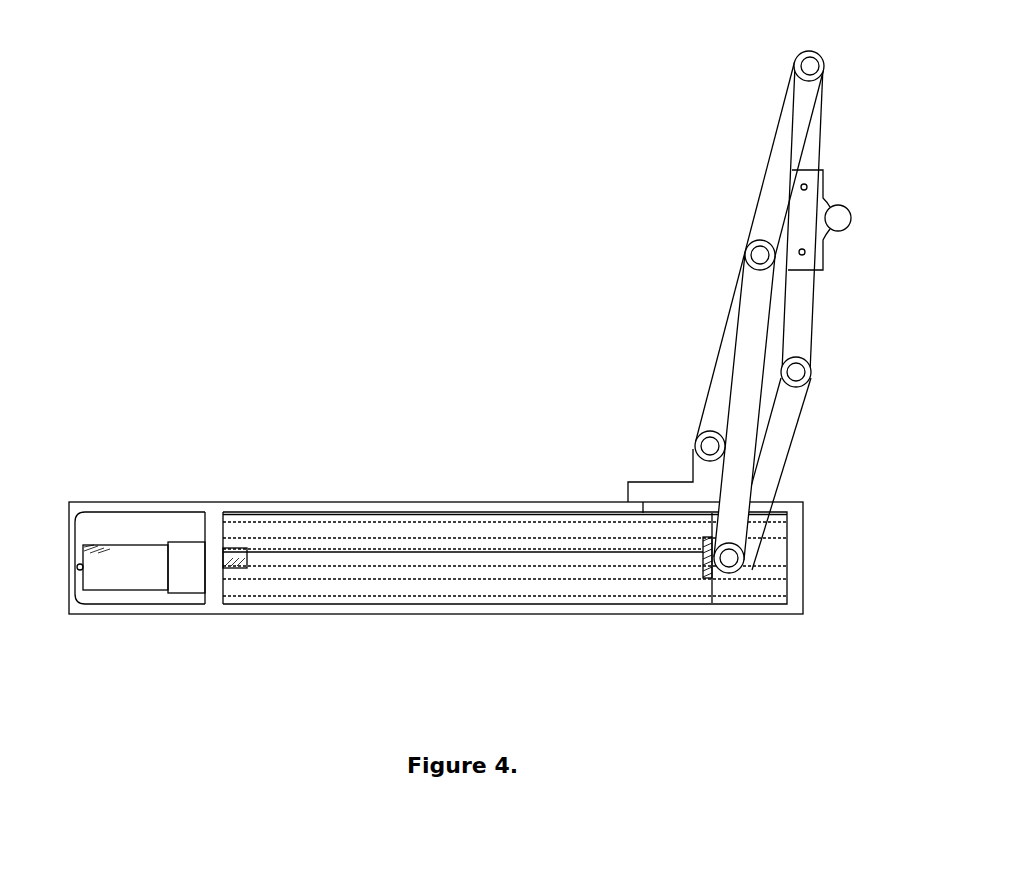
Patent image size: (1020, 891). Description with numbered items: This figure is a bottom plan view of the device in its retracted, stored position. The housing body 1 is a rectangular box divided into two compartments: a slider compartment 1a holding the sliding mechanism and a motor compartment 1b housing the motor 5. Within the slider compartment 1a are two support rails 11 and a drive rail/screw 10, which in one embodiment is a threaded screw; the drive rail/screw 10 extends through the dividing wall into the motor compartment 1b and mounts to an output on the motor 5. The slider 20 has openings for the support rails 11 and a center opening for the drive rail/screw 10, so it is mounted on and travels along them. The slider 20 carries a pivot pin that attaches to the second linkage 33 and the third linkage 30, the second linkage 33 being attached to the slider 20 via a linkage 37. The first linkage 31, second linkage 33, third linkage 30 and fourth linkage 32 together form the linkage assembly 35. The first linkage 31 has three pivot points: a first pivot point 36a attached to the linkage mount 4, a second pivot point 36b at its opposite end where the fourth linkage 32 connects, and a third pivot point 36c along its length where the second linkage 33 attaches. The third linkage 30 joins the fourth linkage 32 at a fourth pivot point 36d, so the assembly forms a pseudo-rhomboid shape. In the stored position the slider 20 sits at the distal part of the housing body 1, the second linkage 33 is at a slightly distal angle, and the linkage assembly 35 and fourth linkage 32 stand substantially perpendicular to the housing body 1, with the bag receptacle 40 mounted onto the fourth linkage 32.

The housing body 1 is at (182, 357).
The slider compartment 1a is at (591, 626).
The motor compartment 1b is at (152, 625).
The linkage mount 4 is at (637, 490).
The motor 5 is at (150, 560).
The drive rail/screw 10 is at (484, 558).
The support rail 11 is at (362, 583).
The slider 20 is at (742, 585).
The third linkage 30 is at (777, 434).
The first linkage 31 is at (774, 193).
The fourth linkage 32 is at (797, 135).
The second linkage 33 is at (741, 378).
The linkage assembly 35 is at (617, 238).
The first pivot point 36a is at (705, 440).
The second pivot point 36b is at (805, 62).
The third pivot point 36c is at (758, 252).
The fourth pivot point 36d is at (805, 372).
The linkage 37 is at (729, 567).
The bag receptacle 40 is at (809, 222).